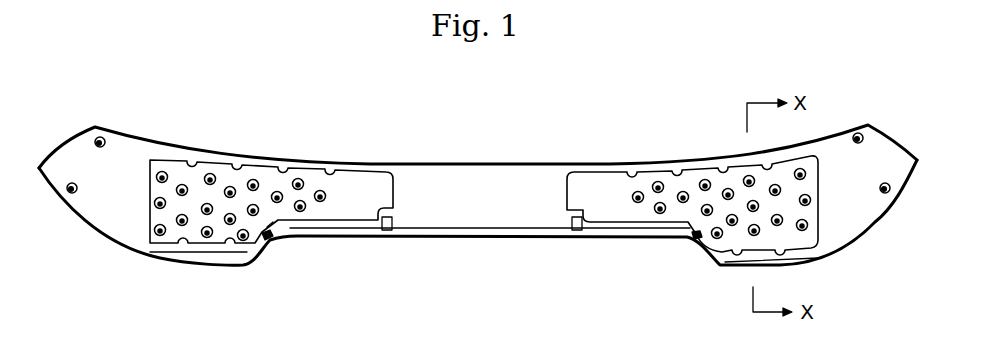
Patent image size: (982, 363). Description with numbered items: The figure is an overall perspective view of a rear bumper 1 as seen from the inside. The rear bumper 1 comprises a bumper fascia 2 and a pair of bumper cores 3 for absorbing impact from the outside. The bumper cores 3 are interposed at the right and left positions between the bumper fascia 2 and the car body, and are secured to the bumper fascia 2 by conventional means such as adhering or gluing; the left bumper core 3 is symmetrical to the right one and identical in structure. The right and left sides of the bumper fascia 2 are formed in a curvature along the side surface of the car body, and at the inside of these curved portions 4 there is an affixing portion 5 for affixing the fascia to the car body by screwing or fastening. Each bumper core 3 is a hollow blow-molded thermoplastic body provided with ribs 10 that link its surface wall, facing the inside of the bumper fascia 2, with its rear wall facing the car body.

The rear bumper 1 is at (503, 118).
The bumper fascia 2 is at (510, 190).
The bumper core 3 is at (346, 164).
The curved portion 4 is at (82, 162).
The affixing portion 5 is at (103, 148).
The rib 10 is at (253, 179).